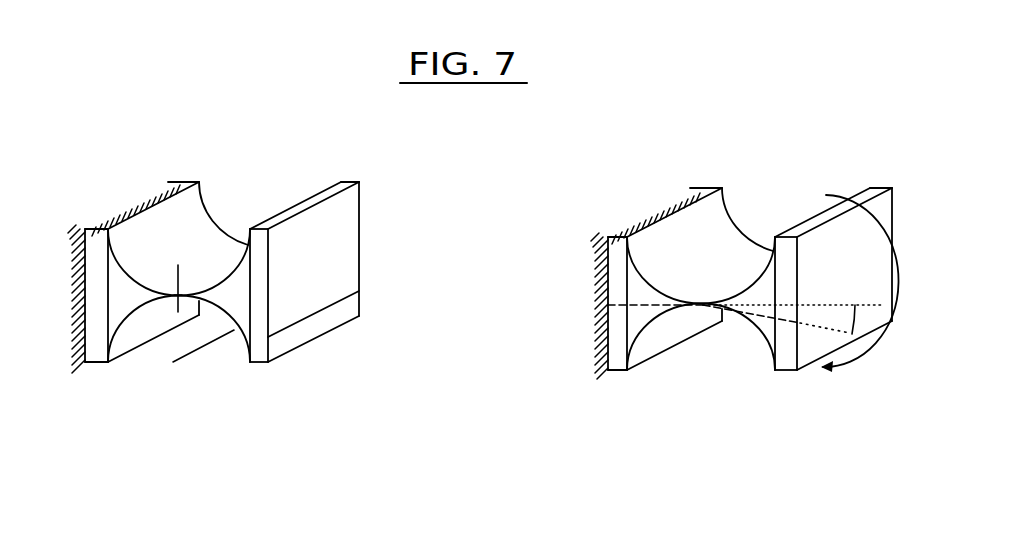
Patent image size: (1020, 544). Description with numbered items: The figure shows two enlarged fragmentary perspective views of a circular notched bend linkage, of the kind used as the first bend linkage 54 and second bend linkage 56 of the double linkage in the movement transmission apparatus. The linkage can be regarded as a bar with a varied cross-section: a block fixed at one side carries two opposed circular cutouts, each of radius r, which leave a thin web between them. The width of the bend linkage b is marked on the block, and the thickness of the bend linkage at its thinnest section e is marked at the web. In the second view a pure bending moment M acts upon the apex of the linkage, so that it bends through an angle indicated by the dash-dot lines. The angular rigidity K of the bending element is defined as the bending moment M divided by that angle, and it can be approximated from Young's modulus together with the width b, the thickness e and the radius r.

The first bend linkage 54 is at (492, 357).
The second bend linkage 56 is at (492, 357).
The width of the bend linkage b is at (313, 313).
The radius of the circular cutout r is at (203, 346).
The thickness of the bend linkage at its thinnest section e is at (171, 288).
The bending moment M is at (869, 283).
The angular rigidity K is at (712, 366).